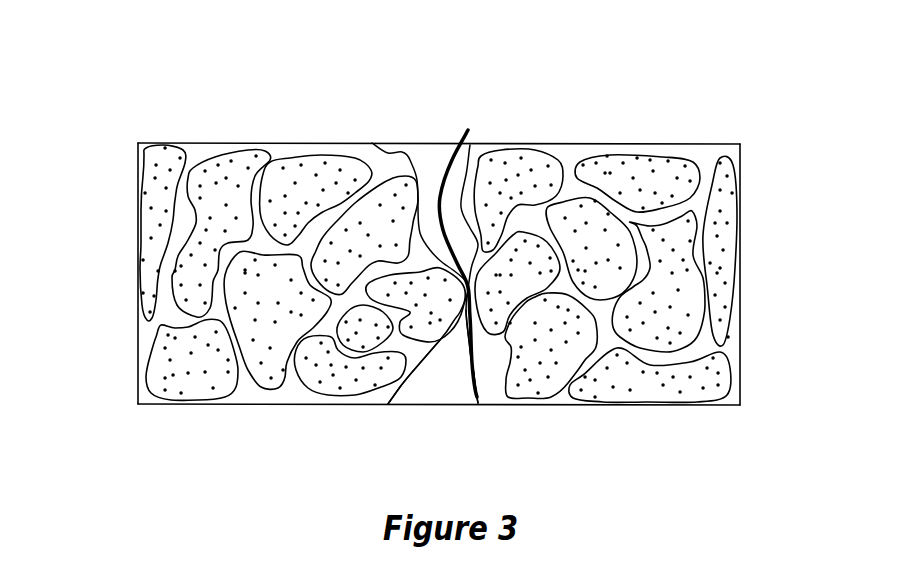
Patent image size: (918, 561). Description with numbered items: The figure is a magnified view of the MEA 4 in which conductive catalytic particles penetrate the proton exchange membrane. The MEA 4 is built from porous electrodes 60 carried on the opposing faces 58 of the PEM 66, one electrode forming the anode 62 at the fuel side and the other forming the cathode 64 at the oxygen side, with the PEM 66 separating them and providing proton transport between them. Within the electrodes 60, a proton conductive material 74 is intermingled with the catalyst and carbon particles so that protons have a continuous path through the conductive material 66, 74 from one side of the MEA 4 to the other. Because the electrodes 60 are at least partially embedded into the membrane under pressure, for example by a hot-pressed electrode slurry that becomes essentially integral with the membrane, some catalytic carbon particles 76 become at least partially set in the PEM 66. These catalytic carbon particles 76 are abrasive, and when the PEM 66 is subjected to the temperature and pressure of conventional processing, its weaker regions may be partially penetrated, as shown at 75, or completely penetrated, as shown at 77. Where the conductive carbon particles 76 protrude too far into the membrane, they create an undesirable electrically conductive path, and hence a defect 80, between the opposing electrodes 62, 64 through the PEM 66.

The MEA 4 is at (703, 91).
The PEM membrane face 58 is at (294, 148).
The porous electrodes 60 is at (457, 274).
The anode 62 is at (137, 320).
The cathode 64 is at (742, 290).
The proton exchange membrane (PEM) 66 is at (434, 383).
The proton conductive material 74 is at (247, 395).
The partially penetrated region 75 is at (426, 172).
The catalytic carbon particles 76 is at (370, 392).
The completely penetrated region 77 is at (477, 397).
The defect 80 is at (468, 130).